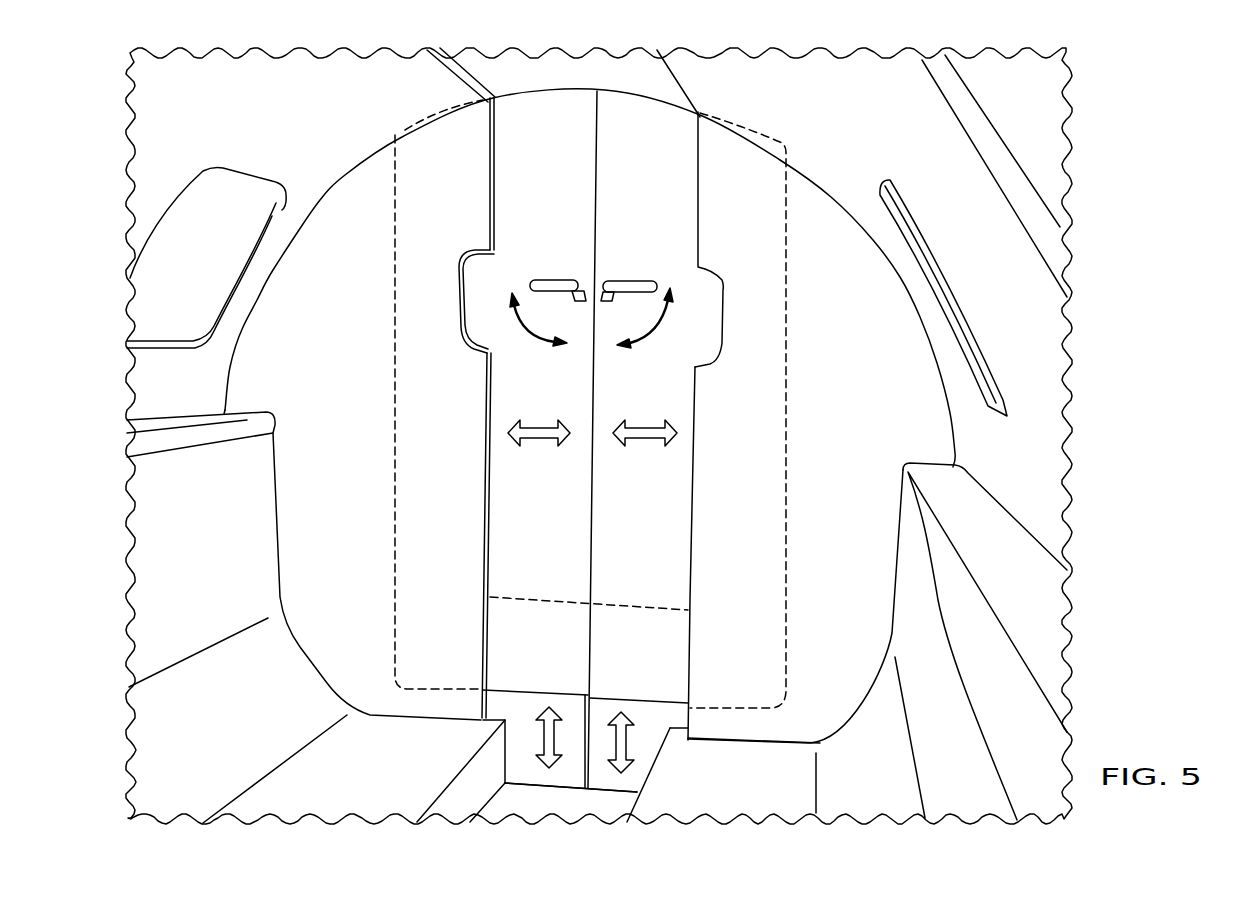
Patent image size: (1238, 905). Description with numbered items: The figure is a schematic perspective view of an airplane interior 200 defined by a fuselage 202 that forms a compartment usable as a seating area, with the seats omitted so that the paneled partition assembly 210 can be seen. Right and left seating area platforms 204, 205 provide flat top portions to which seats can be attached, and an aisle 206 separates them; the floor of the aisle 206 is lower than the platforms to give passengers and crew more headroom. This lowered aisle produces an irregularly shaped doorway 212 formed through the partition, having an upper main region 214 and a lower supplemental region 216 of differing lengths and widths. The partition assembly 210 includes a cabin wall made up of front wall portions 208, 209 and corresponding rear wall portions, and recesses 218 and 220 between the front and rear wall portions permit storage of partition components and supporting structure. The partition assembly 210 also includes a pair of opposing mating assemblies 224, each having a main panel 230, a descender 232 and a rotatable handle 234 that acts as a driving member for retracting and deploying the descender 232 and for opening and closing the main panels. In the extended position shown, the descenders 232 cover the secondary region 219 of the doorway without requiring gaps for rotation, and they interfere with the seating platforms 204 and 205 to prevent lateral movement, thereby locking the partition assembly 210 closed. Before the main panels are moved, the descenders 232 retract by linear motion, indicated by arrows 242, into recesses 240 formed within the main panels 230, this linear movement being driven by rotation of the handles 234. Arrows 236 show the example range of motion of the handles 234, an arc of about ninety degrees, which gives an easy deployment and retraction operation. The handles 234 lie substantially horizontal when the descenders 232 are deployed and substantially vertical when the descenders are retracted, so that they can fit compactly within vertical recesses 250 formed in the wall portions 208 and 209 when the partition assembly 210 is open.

The airplane interior 200 is at (1097, 283).
The fuselage 202 is at (1048, 446).
The right seating area platform 204 is at (783, 786).
The left seating area platform 205 is at (349, 794).
The aisle 206 is at (561, 804).
The front wall portion 208 is at (858, 656).
The front wall portion 209 is at (303, 557).
The paneled partition assembly 210 is at (627, 80).
The doorway 212 is at (504, 216).
The upper main region 214 is at (487, 260).
The lower supplemental region 216 is at (521, 718).
The recess 218 is at (770, 385).
The secondary region 219 is at (512, 740).
The recess 220 is at (410, 375).
The mating assembly 224 is at (505, 488).
The main panel 230 is at (517, 170).
The descender 232 is at (512, 762).
The rotatable handle 234 is at (559, 281).
The arrows 236 is at (538, 347).
The recess 240 is at (507, 623).
The arrows 242 is at (542, 746).
The vertical recess 250 is at (712, 299).